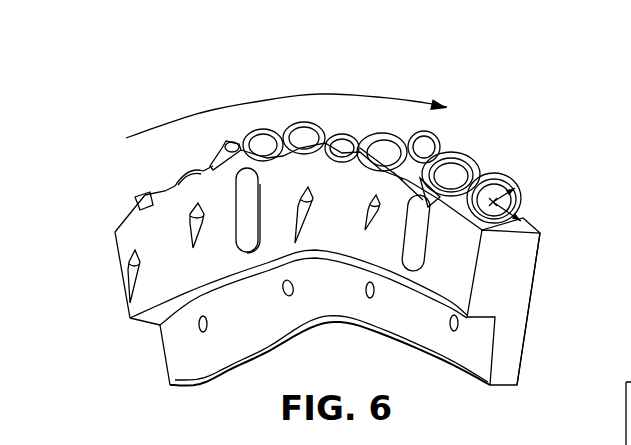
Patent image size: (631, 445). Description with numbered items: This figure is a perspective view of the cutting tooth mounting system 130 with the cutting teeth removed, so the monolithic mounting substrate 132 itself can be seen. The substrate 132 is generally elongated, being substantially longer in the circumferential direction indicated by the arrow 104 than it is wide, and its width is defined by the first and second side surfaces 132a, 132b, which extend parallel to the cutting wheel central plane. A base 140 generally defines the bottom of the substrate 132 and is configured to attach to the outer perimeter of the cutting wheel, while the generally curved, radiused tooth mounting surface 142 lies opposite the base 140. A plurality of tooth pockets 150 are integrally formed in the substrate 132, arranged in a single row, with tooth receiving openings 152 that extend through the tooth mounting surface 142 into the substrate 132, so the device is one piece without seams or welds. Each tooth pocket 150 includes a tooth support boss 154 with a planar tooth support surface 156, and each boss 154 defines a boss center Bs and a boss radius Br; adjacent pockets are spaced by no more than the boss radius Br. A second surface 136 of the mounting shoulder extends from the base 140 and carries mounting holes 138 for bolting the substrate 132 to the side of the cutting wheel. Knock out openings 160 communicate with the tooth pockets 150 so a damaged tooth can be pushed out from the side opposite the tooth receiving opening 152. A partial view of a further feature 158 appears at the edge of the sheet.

The arrow indicating circumferential direction 104 is at (297, 97).
The cutting tooth mounting system 130 is at (467, 58).
The mounting substrate 132 is at (510, 298).
The first side surface 132a is at (533, 277).
The second side surface 132b is at (447, 285).
The second surface 136 is at (173, 338).
The mounting holes 138 is at (290, 294).
The base 140 is at (157, 310).
The tooth mounting surface 142 is at (165, 190).
The tooth pockets 150 is at (494, 157).
The tooth receiving openings 152 is at (380, 152).
The tooth support boss 154 is at (453, 157).
The planar tooth support surface 156 is at (418, 138).
The element 158 is at (613, 442).
The knock out openings 160 is at (190, 229).
The boss radius Br is at (520, 204).
The boss center Bs is at (521, 221).